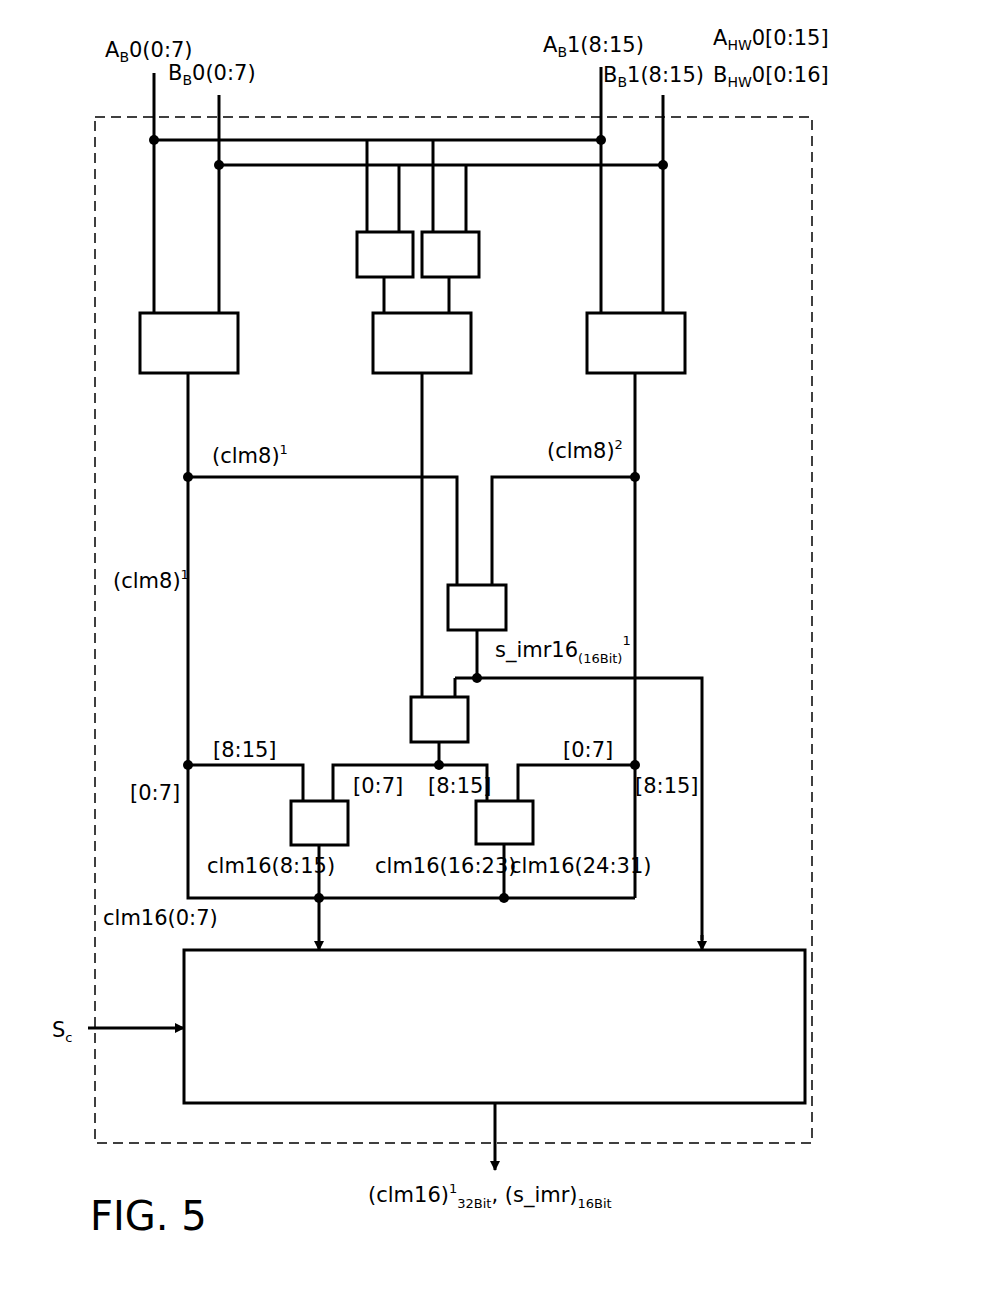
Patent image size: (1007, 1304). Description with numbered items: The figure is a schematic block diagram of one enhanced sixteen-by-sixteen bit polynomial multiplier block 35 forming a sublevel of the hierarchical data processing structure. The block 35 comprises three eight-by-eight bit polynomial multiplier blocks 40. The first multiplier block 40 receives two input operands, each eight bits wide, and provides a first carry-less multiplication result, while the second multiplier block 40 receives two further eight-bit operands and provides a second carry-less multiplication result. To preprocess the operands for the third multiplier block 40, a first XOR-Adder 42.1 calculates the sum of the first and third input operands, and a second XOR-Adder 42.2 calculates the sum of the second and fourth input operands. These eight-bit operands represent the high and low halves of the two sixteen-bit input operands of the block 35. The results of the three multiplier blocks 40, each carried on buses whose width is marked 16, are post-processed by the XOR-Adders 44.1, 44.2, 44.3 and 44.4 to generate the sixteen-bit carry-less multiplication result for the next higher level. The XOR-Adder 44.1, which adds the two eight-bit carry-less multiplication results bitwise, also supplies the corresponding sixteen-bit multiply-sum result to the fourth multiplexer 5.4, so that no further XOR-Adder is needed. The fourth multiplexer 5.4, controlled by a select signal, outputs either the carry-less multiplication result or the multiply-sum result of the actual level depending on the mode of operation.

The enhanced 16×16 bit polynomial multiplier block 35 is at (96, 58).
The 8×8 bit polynomial multiplier block 40 is at (150, 318).
The first XOR-Adder 42.1 is at (363, 239).
The second XOR-Adder 42.2 is at (470, 242).
The XOR-Adder 44.1 is at (495, 600).
The XOR-Adder 44.2 is at (410, 710).
The XOR-Adder 44.3 is at (298, 820).
The XOR-Adder 44.4 is at (523, 822).
The bit width 16 is at (195, 397).
The fourth multiplexer 5.4 is at (727, 1090).